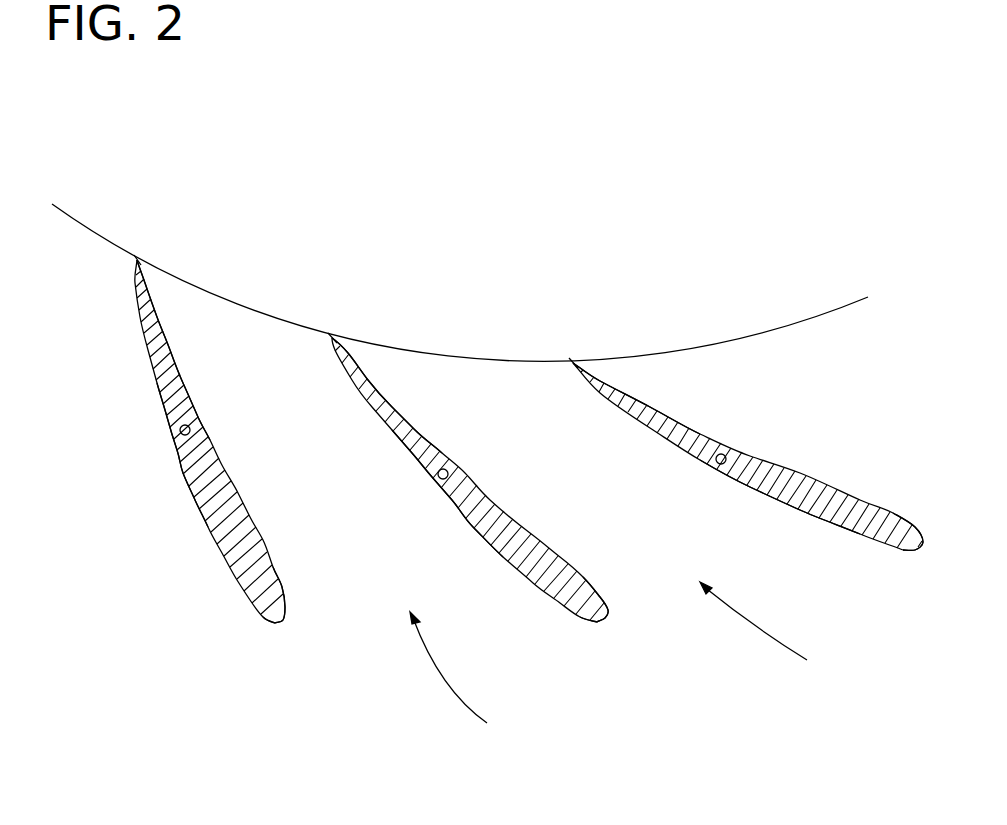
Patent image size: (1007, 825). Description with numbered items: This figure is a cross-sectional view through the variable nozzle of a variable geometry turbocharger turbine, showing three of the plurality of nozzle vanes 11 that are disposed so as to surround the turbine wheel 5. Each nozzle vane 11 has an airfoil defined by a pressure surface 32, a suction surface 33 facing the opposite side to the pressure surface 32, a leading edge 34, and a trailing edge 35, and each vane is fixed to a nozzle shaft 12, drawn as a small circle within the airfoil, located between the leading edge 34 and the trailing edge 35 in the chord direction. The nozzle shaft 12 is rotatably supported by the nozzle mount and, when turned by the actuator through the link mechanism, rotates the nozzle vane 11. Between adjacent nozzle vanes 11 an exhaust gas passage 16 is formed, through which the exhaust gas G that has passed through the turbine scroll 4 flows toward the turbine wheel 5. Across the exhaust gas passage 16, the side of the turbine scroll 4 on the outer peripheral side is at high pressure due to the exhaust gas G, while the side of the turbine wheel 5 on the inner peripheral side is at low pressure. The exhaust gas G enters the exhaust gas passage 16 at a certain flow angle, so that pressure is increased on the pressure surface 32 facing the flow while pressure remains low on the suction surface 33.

The turbine scroll 4 is at (499, 806).
The turbine wheel 5 is at (572, 150).
The nozzle vane 11 is at (247, 516).
The nozzle shaft 12 is at (191, 426).
The exhaust gas passage 16 is at (258, 336).
The pressure surface 32 is at (189, 377).
The suction surface 33 is at (196, 500).
The leading edge 34 is at (278, 625).
The trailing edge 35 is at (137, 259).
The exhaust gas G is at (620, 661).